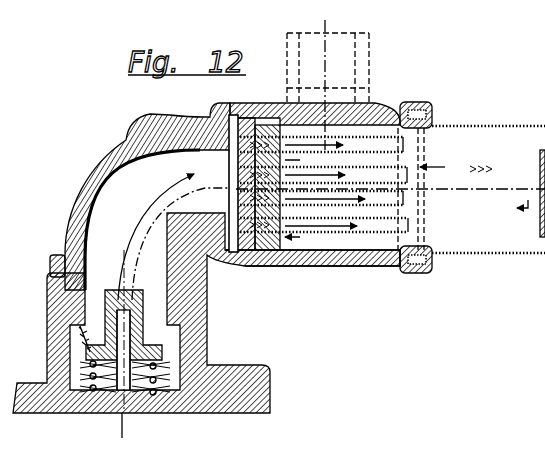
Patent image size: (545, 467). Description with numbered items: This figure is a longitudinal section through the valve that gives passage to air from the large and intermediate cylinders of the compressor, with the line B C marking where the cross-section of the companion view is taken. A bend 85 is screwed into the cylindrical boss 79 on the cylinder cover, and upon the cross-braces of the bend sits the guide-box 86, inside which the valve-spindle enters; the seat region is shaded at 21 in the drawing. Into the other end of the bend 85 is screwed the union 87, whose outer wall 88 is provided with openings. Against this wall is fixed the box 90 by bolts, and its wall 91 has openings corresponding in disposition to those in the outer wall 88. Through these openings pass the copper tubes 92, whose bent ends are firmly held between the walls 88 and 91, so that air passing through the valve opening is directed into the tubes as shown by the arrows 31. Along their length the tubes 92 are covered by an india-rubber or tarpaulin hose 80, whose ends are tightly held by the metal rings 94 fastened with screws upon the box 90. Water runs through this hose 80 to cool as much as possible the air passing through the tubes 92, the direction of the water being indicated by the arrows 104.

The bend 85 is at (143, 201).
The cylindrical boss 79 is at (268, 424).
The valve seat 21 is at (92, 322).
The guide-box 86 is at (143, 346).
The box 90 is at (336, 268).
The union 87 is at (266, 103).
The outer wall 88 is at (229, 167).
The arrows 31 is at (324, 187).
The copper tubes 92 is at (365, 200).
The wall 91 is at (279, 248).
The section line B C is at (310, 133).
The metal rings 94 is at (430, 106).
The hose 80 is at (479, 251).
The arrows 104 is at (482, 180).
The section line B C B is at (328, 78).